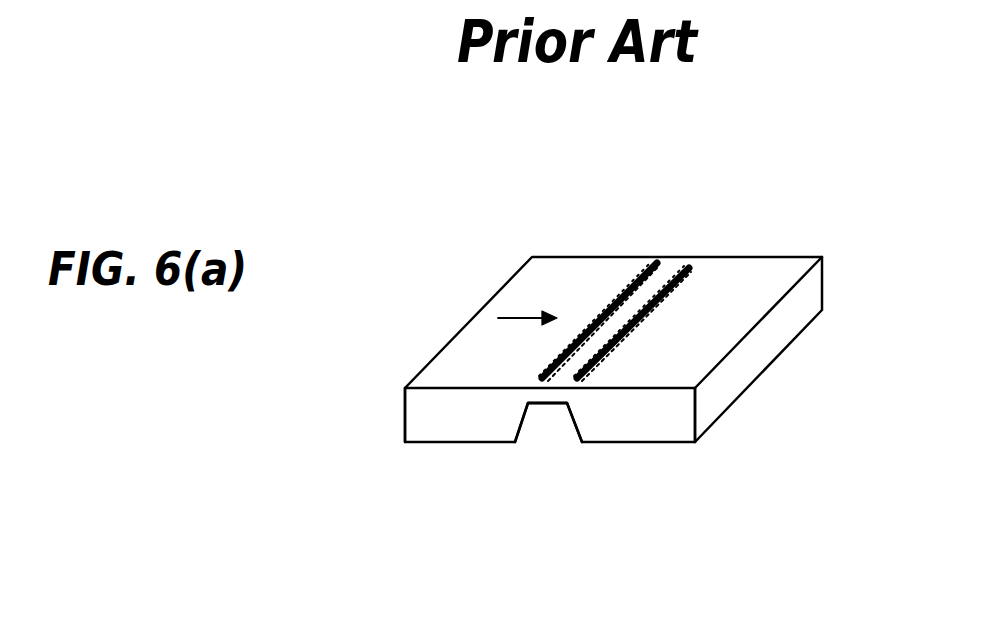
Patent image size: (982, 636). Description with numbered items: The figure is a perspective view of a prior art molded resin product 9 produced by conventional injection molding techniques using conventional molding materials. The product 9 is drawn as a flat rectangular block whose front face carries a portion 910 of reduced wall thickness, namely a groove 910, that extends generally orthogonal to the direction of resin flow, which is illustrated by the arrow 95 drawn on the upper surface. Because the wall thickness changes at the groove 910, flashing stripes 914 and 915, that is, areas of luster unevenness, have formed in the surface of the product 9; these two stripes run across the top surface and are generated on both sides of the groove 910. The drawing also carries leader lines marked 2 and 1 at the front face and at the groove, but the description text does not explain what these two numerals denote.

The molded resin product 9 is at (808, 236).
The flashing stripe 914 is at (620, 297).
The flashing stripe 915 is at (670, 290).
The arrow 95 is at (517, 316).
The end portion electrode 2 is at (422, 417).
The recess bottom surface 1 is at (550, 405).
The groove 910 is at (558, 417).